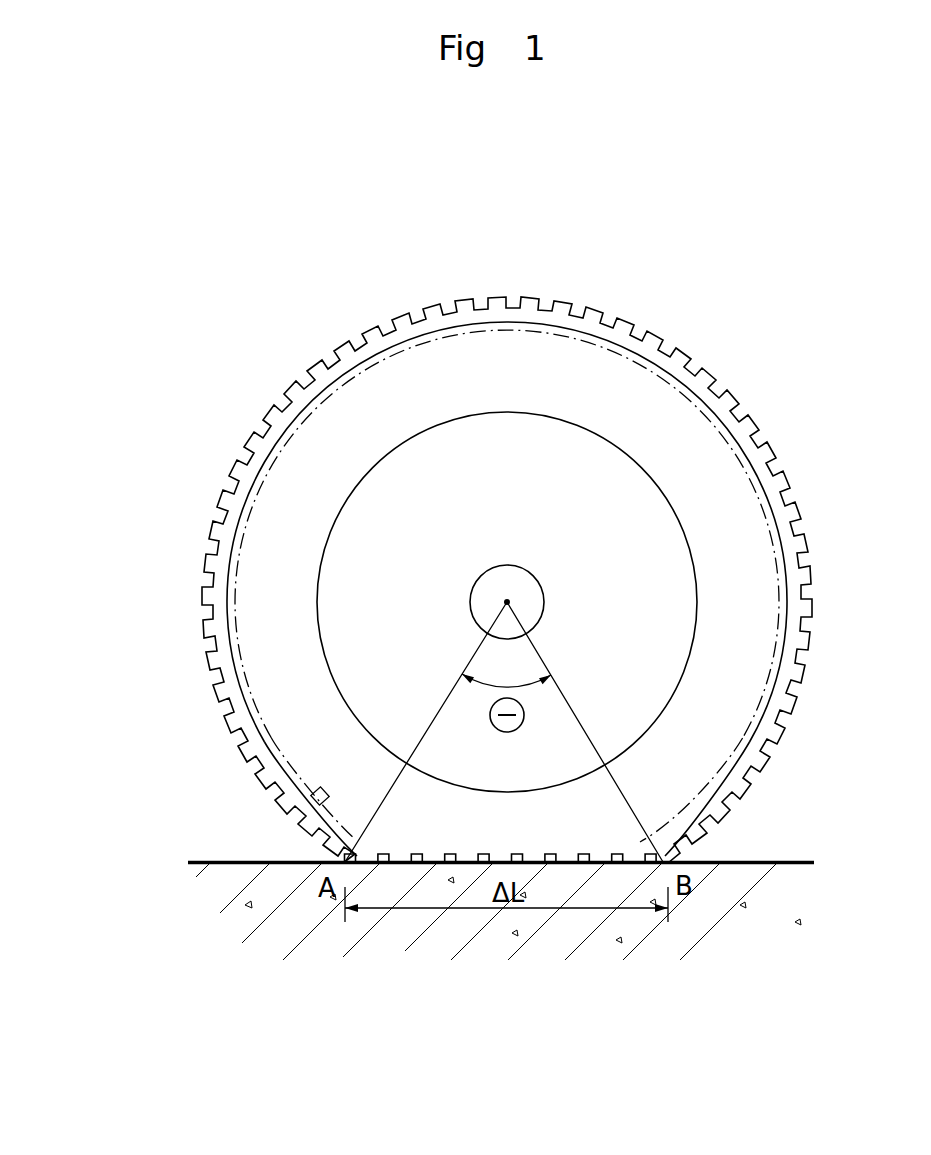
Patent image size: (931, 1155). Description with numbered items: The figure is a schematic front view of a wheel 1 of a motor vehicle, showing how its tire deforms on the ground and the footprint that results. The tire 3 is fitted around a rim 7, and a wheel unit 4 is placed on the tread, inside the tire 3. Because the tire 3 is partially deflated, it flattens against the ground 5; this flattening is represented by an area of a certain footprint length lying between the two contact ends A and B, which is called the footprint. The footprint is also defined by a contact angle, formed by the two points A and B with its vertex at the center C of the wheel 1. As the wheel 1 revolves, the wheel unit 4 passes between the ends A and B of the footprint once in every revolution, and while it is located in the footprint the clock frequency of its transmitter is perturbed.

The wheel 1 is at (745, 334).
The tire 3 is at (317, 457).
The wheel unit 4 is at (322, 797).
The ground 5 is at (272, 903).
The rim 7 is at (453, 500).
The center of the wheel C is at (507, 602).